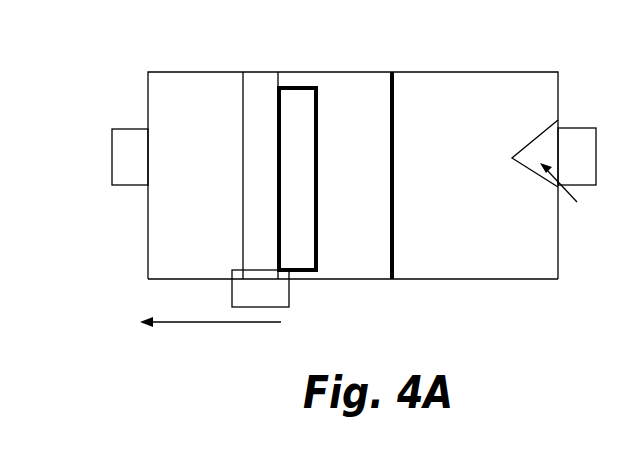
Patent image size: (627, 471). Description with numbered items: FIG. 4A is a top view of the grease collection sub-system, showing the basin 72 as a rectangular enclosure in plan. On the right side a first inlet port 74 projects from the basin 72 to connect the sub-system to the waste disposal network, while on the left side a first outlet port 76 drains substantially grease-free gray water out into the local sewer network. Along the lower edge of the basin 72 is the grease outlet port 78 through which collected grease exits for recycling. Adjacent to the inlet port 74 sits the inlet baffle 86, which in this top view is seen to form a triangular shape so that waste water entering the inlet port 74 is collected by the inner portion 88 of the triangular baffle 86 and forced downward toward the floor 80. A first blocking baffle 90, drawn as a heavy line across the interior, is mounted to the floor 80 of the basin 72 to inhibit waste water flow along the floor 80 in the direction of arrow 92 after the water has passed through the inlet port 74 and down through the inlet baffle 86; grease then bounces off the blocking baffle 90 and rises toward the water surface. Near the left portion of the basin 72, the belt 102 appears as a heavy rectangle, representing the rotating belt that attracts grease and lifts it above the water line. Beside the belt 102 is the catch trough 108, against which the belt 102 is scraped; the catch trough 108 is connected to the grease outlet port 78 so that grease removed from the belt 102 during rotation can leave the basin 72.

The basin 72 is at (297, 72).
The first inlet port 74 is at (575, 128).
The first outlet port 76 is at (112, 150).
The grease outlet port 78 is at (289, 298).
The floor 80 is at (372, 280).
The inlet baffle 86 is at (531, 138).
The inner portion 88 is at (575, 193).
The first blocking baffle 90 is at (394, 225).
The arrow 92 is at (175, 322).
The belt 102 is at (298, 202).
The catch trough 108 is at (258, 80).